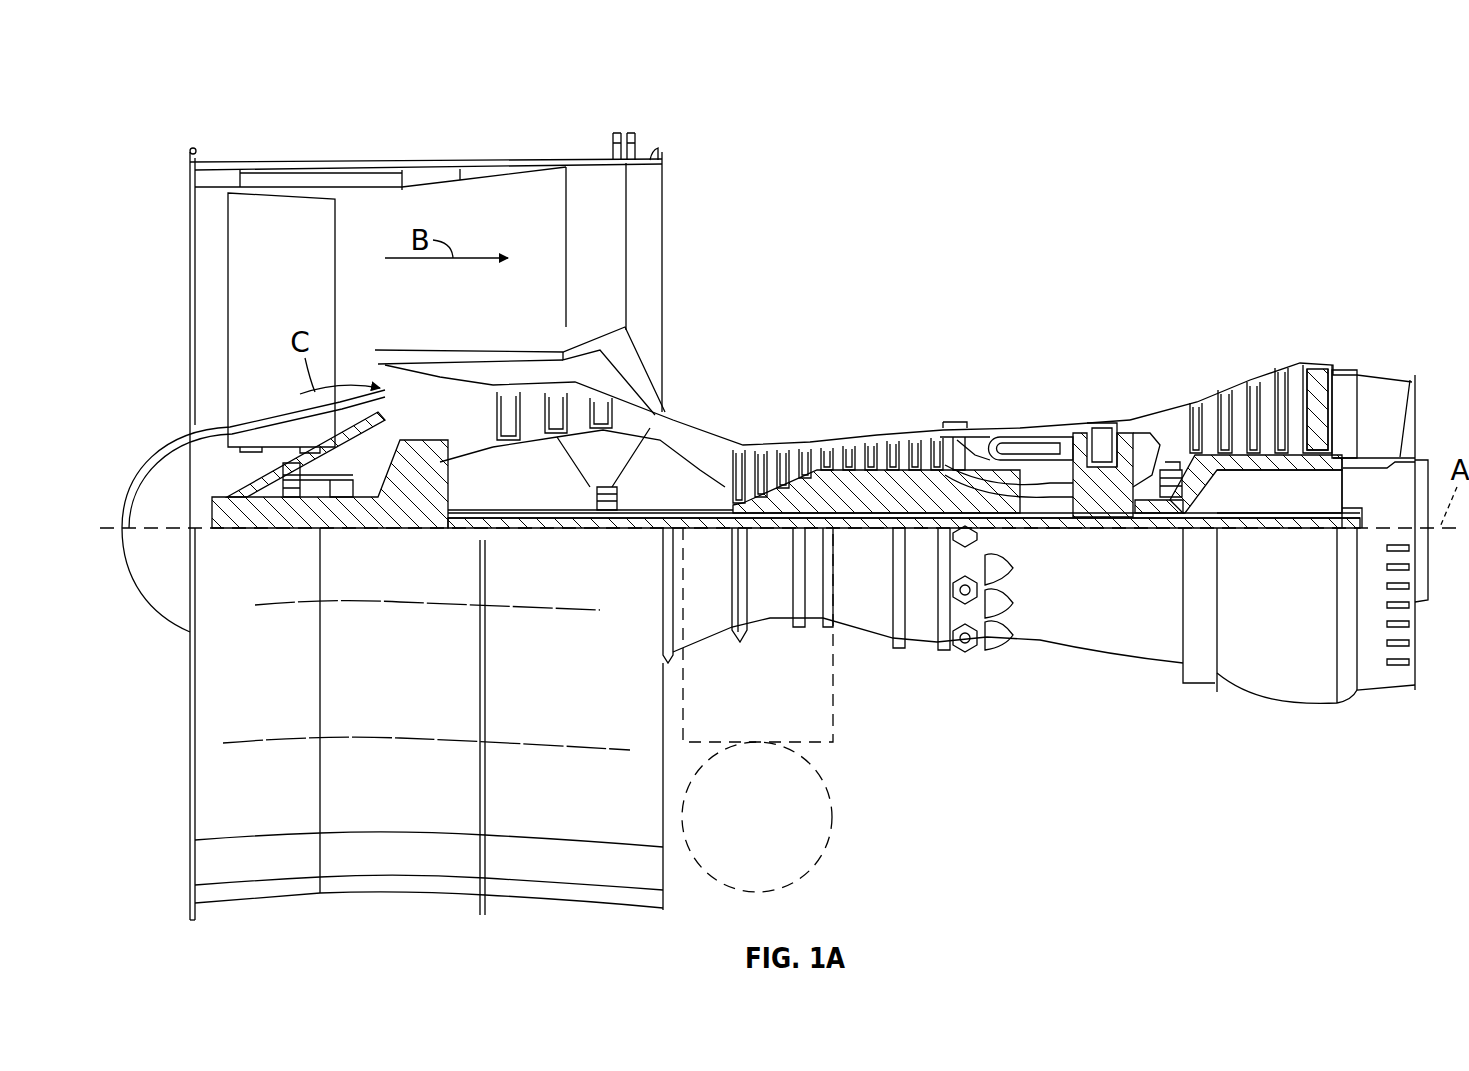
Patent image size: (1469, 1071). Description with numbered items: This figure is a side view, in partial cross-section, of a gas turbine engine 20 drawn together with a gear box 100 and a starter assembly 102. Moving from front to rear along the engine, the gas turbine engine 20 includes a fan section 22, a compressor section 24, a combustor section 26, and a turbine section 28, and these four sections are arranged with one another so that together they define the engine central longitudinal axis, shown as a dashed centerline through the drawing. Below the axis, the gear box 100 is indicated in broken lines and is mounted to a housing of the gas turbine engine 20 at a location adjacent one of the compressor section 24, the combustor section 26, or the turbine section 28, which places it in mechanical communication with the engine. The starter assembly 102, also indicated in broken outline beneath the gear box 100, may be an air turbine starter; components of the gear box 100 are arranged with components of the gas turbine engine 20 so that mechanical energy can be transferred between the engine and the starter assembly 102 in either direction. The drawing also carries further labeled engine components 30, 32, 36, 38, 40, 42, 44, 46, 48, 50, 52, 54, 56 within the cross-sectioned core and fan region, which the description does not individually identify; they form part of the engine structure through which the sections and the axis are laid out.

The gas turbine engine 20 is at (1238, 194).
The fan section 22 is at (193, 140).
The compressor section 24 is at (858, 382).
The combustor section 26 is at (1018, 384).
The turbine section 28 is at (1206, 368).
The low speed spool 30 is at (882, 538).
The high speed spool 32 is at (947, 453).
The engine static structure 36 is at (922, 652).
The bearing systems 38 is at (293, 490).
The inner shaft 40 is at (675, 532).
The fan 42 is at (278, 292).
The low pressure compressor 44 is at (583, 405).
The low pressure turbine 46 is at (1268, 392).
The geared architecture 48 is at (430, 497).
The outer shaft 50 is at (1055, 522).
The high pressure compressor 52 is at (843, 497).
The high pressure turbine 54 is at (1110, 420).
The combustor 56 is at (1025, 447).
The gear box 100 is at (836, 735).
The starter assembly 102 is at (836, 810).